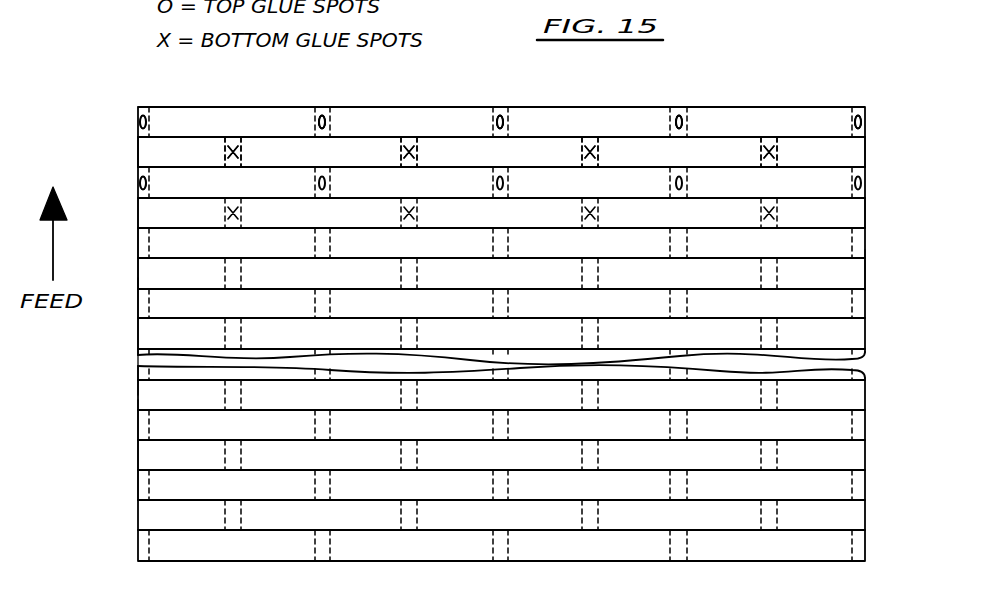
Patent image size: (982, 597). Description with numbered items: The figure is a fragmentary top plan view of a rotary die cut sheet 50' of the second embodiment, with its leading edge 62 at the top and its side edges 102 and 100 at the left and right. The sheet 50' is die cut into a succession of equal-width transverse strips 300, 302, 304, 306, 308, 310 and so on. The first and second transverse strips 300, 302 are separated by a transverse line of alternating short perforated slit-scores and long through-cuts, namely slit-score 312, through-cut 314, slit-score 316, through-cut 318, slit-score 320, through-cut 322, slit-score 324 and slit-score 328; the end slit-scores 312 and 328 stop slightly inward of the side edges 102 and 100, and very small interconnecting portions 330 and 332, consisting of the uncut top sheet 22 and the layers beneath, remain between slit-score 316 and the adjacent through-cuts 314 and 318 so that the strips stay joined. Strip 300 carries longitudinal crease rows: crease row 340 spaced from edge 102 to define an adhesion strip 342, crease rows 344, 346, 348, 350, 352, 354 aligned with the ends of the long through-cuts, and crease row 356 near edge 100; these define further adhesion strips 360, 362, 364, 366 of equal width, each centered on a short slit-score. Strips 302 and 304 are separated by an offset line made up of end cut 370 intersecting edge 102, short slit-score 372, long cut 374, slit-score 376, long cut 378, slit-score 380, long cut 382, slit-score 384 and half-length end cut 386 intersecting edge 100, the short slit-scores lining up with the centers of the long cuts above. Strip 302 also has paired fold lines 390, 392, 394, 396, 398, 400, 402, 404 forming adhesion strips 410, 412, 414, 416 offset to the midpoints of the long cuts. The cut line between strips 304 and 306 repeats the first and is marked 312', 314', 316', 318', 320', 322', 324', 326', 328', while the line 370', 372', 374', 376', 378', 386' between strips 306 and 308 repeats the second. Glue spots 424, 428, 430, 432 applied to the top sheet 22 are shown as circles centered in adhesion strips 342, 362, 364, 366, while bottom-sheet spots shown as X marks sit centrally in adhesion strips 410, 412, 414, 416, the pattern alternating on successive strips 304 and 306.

The top sheet 22 is at (744, 113).
The rotary die cut sheet 50' is at (97, 450).
The leading edge 62 is at (450, 109).
The side edge 100 is at (866, 273).
The side edge 102 is at (137, 278).
The first transverse strip 300 is at (223, 117).
The second transverse strip 302 is at (140, 152).
The third transverse strip 304 is at (148, 166).
The fourth transverse strip 306 is at (148, 212).
The fifth transverse strip 308 is at (147, 244).
The sixth transverse strip 310 is at (150, 272).
The short perforated slit-score 312 is at (181, 152).
The short perforated slit-score 312' is at (118, 186).
The long through-cut 314 is at (232, 125).
The long through-cut 314' is at (181, 215).
The short perforated slit-score 316 is at (321, 155).
The short perforated slit-score 316' is at (321, 214).
The long through-cut 318 is at (411, 125).
The long through-cut 318' is at (458, 216).
The short perforated slit-score 320 is at (499, 155).
The short perforated slit-score 320' is at (523, 212).
The long through-cut 322 is at (589, 125).
The long through-cut 322' is at (628, 216).
The short perforated slit-score 324 is at (679, 155).
The short perforated slit-score 324' is at (700, 212).
The long through-cut 326' is at (814, 215).
The short perforated slit-score 328 is at (826, 140).
The short perforated slit-score 328' is at (887, 213).
The interconnecting portion 330 is at (317, 128).
The interconnecting portion 332 is at (336, 122).
The crease row 340 is at (160, 108).
The adhesion strip 342 is at (140, 112).
The crease row 344 is at (317, 117).
The crease row 346 is at (343, 108).
The crease row 348 is at (493, 124).
The crease row 350 is at (508, 125).
The crease row 352 is at (670, 125).
The crease row 354 is at (687, 124).
The crease row 356 is at (852, 123).
The adhesion strip 360 is at (352, 80).
The adhesion strip 362 is at (504, 110).
The adhesion strip 364 is at (683, 112).
The adhesion strip 366 is at (858, 112).
The end cut 370 is at (232, 186).
The end cut 370' is at (197, 241).
The short perforated slit-score 372 is at (235, 182).
The short perforated slit-score 372' is at (254, 241).
The long cut 374 is at (290, 182).
The long cut 374' is at (359, 241).
The short perforated slit-score 376 is at (411, 186).
The short perforated slit-score 376' is at (429, 241).
The long cut 378 is at (473, 182).
The long cut 378' is at (541, 241).
The short perforated slit-score 380 is at (600, 172).
The long cut 382 is at (667, 171).
The short perforated slit-score 384 is at (763, 168).
The end cut 386 is at (821, 156).
The end cut 386' is at (817, 242).
The fold line 390 is at (226, 152).
The fold line 392 is at (240, 152).
The fold line 394 is at (402, 152).
The fold line 396 is at (416, 152).
The fold line 398 is at (583, 152).
The fold line 400 is at (600, 148).
The fold line 402 is at (762, 152).
The fold line 404 is at (776, 152).
The adhesion strip 410 is at (233, 118).
The adhesion strip 412 is at (408, 168).
The adhesion strip 414 is at (597, 138).
The adhesion strip 416 is at (774, 170).
The glue spot 424 is at (141, 118).
The glue spot 428 is at (338, 110).
The glue spot 430 is at (678, 114).
The glue spot 432 is at (865, 126).